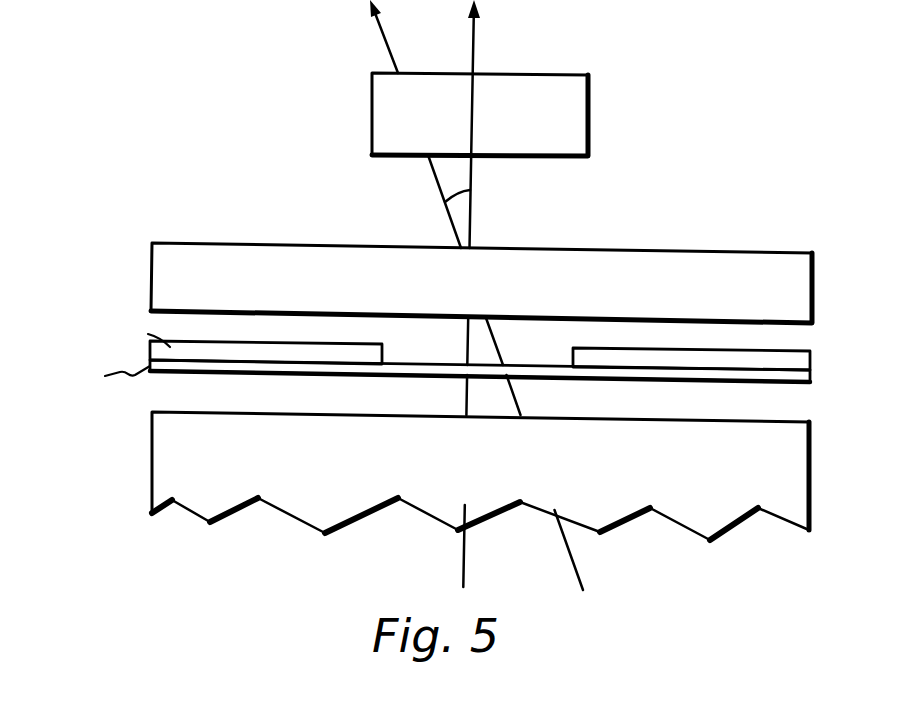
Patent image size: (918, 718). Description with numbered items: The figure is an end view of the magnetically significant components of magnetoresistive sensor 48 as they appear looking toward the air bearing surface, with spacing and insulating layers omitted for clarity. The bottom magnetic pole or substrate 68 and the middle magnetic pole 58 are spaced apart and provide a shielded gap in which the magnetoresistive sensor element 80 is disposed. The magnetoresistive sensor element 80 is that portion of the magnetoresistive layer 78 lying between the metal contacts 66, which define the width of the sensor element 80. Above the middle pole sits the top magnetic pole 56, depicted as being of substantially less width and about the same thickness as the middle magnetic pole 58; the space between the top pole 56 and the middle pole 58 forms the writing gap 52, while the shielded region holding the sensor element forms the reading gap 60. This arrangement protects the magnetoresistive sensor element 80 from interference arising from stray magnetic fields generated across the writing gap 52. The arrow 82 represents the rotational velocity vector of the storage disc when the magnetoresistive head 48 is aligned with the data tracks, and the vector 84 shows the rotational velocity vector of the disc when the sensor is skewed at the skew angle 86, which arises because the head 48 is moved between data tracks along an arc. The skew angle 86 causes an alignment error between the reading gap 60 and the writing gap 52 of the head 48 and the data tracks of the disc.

The magnetoresistive sensor 48 is at (297, 70).
The writing gap 52 is at (555, 208).
The top magnetic pole 56 is at (588, 92).
The middle magnetic pole 58 is at (707, 260).
The reading gap 60 is at (555, 378).
The metal contact 66 is at (382, 346).
The bottom magnetic pole or substrate 68 is at (793, 480).
The magnetoresistive layer 78 is at (800, 378).
The magnetoresistive sensor element 80 is at (497, 372).
The arrow 82 is at (473, 40).
The vector 84 is at (383, 34).
The skew angle 86 is at (471, 185).